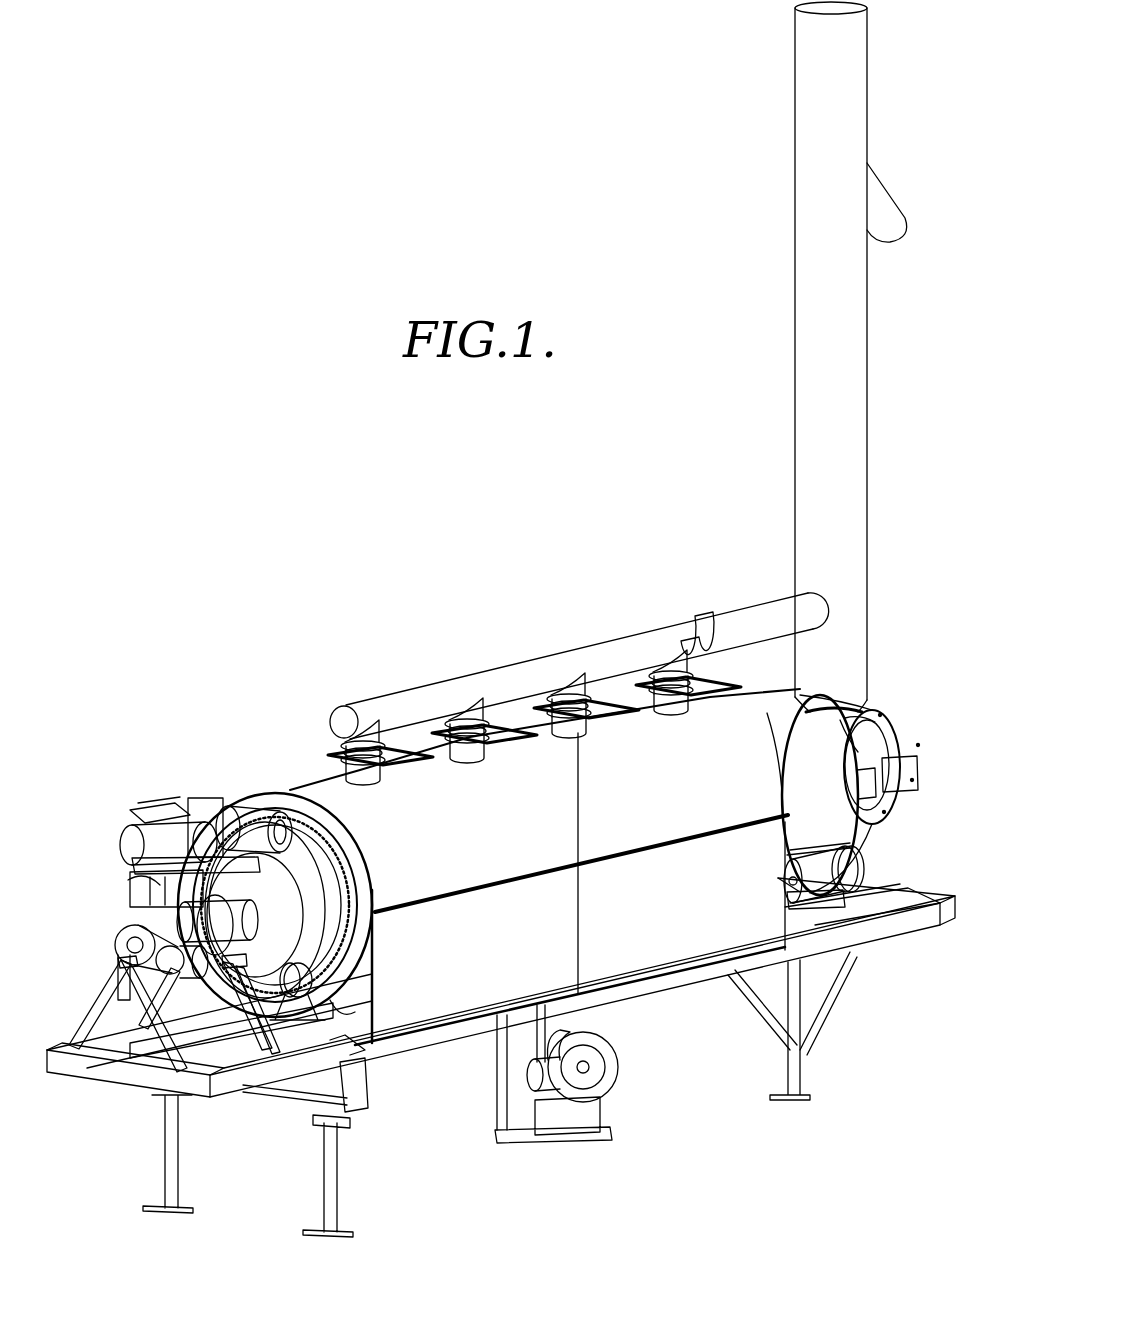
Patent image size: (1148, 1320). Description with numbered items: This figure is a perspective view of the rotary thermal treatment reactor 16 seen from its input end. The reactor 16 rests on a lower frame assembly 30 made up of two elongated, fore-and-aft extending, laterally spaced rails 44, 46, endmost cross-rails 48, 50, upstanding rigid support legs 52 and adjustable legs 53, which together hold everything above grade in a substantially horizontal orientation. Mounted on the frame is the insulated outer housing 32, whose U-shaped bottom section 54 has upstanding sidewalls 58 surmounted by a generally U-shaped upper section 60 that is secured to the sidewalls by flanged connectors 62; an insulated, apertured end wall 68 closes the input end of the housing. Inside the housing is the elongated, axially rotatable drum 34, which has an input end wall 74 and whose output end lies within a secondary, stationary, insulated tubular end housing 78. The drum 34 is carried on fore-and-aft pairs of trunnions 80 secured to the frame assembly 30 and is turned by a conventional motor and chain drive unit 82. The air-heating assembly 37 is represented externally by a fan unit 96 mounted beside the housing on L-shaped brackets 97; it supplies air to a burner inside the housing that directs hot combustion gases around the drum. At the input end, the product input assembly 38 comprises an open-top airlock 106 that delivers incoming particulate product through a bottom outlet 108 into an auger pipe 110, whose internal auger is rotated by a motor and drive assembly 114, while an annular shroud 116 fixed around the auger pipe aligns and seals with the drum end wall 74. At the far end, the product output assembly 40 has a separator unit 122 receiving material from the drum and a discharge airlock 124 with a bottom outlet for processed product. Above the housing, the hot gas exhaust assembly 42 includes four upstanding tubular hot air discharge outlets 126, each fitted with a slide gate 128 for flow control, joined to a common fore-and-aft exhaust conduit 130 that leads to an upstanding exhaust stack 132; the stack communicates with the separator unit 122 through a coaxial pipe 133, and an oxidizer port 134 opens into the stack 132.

The reactor 16 is at (338, 568).
The lower frame assembly 30 is at (82, 1105).
The insulated outer housing 32 is at (298, 786).
The drum 34 is at (318, 846).
The air-heating assembly 37 is at (642, 1123).
The product input assembly 38 is at (95, 858).
The product output assembly 40 is at (912, 722).
The hot gas exhaust assembly 42 is at (557, 627).
The rail 44 is at (392, 1048).
The rail 46 is at (107, 1040).
The cross-rail 48 is at (120, 1075).
The cross-rail 50 is at (893, 905).
The support legs 52 is at (815, 1020).
The adjustable legs 53 is at (332, 1175).
The bottom section 54 is at (473, 1030).
The sidewalls 58 is at (686, 945).
The upper section 60 is at (328, 765).
The flanged connectors 62 is at (660, 830).
The end wall 68 is at (360, 1010).
The input end wall 74 is at (335, 862).
The end housing 78 is at (805, 775).
The trunnions 80 is at (335, 978).
The motor and chain drive unit 82 is at (343, 1005).
The fan unit 96 is at (600, 1097).
The L-shaped brackets 97 is at (592, 1140).
The airlock 106 is at (160, 805).
The bottom outlet 108 is at (140, 890).
The auger pipe 110 is at (232, 933).
The motor and drive assembly 114 is at (125, 985).
The annular shroud 116 is at (300, 930).
The separator unit 122 is at (875, 758).
The discharge airlock 124 is at (848, 870).
The hot air discharge outlets 126 is at (684, 712).
The slide gate 128 is at (700, 688).
The exhaust conduit 130 is at (522, 678).
The exhaust stack 132 is at (823, 312).
The coaxial pipe 133 is at (848, 722).
The oxidizer port 134 is at (880, 208).